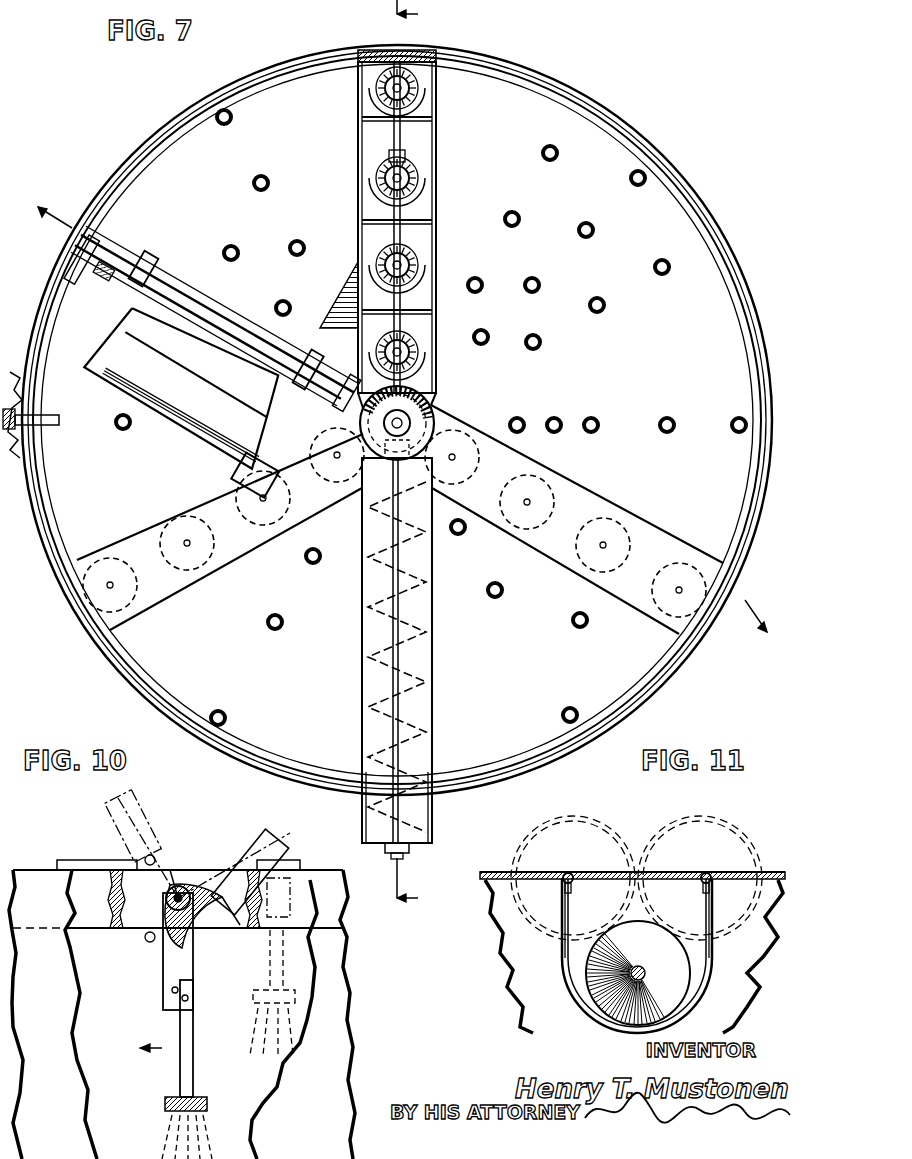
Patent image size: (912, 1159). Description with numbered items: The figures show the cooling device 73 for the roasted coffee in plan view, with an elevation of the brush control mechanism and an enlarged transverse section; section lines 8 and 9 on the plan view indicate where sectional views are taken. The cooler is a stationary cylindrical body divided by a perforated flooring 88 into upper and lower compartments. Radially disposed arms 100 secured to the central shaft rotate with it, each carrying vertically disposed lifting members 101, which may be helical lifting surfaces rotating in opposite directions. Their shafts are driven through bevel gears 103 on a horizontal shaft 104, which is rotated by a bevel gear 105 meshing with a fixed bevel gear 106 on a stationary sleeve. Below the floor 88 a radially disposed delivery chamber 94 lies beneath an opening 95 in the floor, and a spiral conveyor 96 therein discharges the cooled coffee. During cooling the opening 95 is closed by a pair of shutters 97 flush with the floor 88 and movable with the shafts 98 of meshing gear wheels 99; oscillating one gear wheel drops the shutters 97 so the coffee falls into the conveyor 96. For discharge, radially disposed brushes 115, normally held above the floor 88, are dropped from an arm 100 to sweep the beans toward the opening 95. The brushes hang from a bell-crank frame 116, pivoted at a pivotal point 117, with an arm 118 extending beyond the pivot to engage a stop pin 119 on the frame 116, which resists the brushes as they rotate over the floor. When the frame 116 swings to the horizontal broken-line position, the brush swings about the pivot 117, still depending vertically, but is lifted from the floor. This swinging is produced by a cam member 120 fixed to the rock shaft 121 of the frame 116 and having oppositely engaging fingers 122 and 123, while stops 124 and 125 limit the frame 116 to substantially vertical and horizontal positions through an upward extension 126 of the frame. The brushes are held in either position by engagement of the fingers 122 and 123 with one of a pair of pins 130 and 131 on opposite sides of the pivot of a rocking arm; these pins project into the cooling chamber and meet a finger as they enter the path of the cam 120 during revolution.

In FIG. 7, the section line 8- 8 is at (418, 455).
In FIG. 7, the section line 9- 9 is at (407, 402).
In FIG. 7, the cooling device 73 is at (650, 156).
In FIG. 7, the perforated flooring 88 is at (431, 417).
In FIG. 11, the perforated flooring 88 is at (752, 870).
In FIG. 11, the delivery chamber 94 is at (570, 990).
In FIG. 7, the opening 95 is at (362, 628).
In FIG. 11, the opening 95 is at (568, 870).
In FIG. 7, the spiral conveyor 96 is at (432, 672).
In FIG. 11, the spiral conveyor 96 is at (598, 1010).
In FIG. 7, the shutters 97 is at (430, 638).
In FIG. 11, the shutters 97 is at (612, 880).
In FIG. 11, the shafts 98 is at (571, 874).
In FIG. 11, the gear wheels 99 is at (622, 833).
In FIG. 7, the radially disposed arms 100 is at (358, 130).
In FIG. 7, the lifting members 101 is at (418, 241).
In FIG. 7, the bevel gears 103 is at (428, 185).
In FIG. 7, the horizontally disposed shaft 104 is at (402, 143).
In FIG. 7, the bevel gear 105 is at (432, 398).
In FIG. 7, the fixed bevel gear 106 is at (433, 412).
In FIG. 7, the brushes 115 is at (178, 283).
In FIG. 10, the brushes 115 is at (168, 1125).
In FIG. 7, the bell-crank frame 116 is at (133, 306).
In FIG. 10, the bell-crank frame 116 is at (163, 965).
In FIG. 10, the pivotal point 117 is at (190, 998).
In FIG. 7, the arm 118 is at (147, 262).
In FIG. 10, the arm 118 is at (192, 990).
In FIG. 10, the stop pin 119 is at (175, 990).
In FIG. 7, the cam member 120 is at (88, 276).
In FIG. 10, the cam member 120 is at (183, 893).
In FIG. 7, the rock shaft 121 is at (215, 320).
In FIG. 10, the rock shaft 121 is at (182, 893).
In FIG. 10, the finger 122 is at (193, 946).
In FIG. 10, the finger 123 is at (232, 925).
In FIG. 7, the stop 124 is at (236, 468).
In FIG. 10, the stop 124 is at (88, 868).
In FIG. 7, the stop 125 is at (345, 312).
In FIG. 10, the stop 125 is at (300, 866).
In FIG. 7, the upward extension 126 is at (182, 408).
In FIG. 10, the upward extension 126 is at (258, 840).
In FIG. 7, the pin 130 is at (50, 426).
In FIG. 10, the pin 130 is at (155, 855).
In FIG. 10, the pin 131 is at (145, 940).